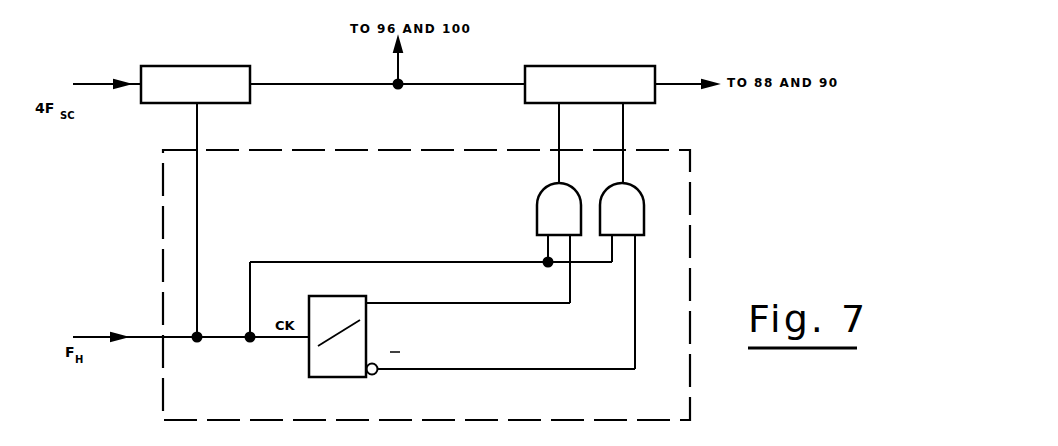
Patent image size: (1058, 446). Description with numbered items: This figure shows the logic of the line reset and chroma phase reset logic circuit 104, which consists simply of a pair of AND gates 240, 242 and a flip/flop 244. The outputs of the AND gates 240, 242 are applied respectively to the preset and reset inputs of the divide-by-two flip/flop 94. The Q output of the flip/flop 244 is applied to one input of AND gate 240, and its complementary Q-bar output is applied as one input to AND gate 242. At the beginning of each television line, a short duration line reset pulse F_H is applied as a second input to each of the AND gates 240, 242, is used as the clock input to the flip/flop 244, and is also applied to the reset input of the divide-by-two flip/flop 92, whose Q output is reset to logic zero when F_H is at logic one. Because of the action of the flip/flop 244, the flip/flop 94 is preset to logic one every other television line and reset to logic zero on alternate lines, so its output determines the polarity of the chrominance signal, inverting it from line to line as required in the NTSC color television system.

The divide-by-two flip/flop 92 is at (237, 66).
The divide-by-two flip/flop 94 is at (630, 64).
The line reset and chroma phase reset logic circuit 104 is at (692, 182).
The AND gate 240 is at (551, 183).
The AND gate 242 is at (632, 183).
The flip/flop 244 is at (370, 377).